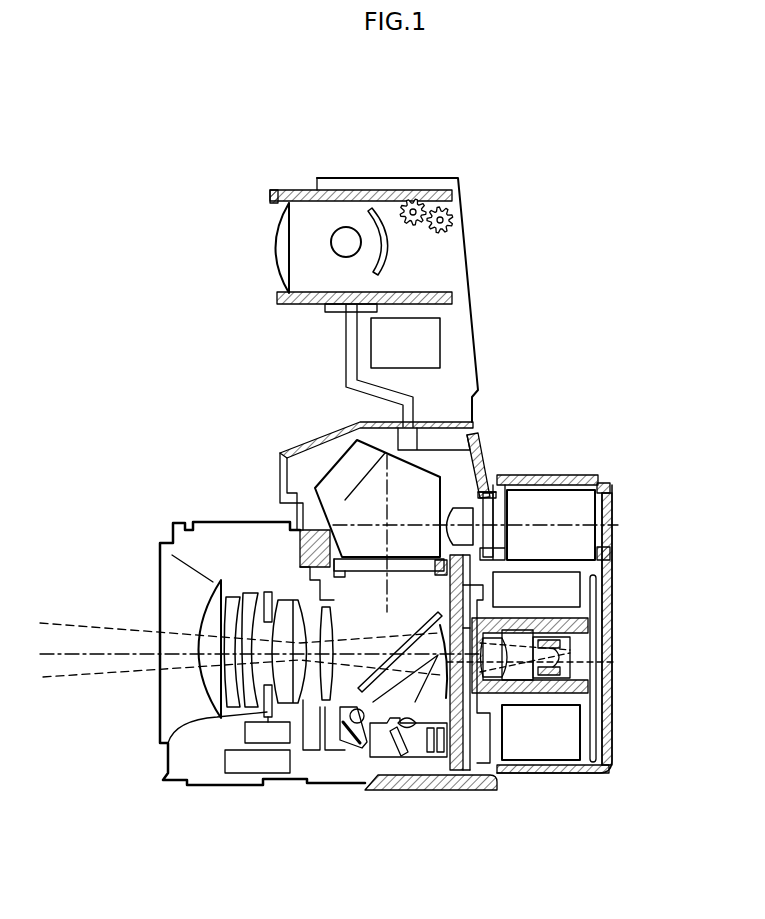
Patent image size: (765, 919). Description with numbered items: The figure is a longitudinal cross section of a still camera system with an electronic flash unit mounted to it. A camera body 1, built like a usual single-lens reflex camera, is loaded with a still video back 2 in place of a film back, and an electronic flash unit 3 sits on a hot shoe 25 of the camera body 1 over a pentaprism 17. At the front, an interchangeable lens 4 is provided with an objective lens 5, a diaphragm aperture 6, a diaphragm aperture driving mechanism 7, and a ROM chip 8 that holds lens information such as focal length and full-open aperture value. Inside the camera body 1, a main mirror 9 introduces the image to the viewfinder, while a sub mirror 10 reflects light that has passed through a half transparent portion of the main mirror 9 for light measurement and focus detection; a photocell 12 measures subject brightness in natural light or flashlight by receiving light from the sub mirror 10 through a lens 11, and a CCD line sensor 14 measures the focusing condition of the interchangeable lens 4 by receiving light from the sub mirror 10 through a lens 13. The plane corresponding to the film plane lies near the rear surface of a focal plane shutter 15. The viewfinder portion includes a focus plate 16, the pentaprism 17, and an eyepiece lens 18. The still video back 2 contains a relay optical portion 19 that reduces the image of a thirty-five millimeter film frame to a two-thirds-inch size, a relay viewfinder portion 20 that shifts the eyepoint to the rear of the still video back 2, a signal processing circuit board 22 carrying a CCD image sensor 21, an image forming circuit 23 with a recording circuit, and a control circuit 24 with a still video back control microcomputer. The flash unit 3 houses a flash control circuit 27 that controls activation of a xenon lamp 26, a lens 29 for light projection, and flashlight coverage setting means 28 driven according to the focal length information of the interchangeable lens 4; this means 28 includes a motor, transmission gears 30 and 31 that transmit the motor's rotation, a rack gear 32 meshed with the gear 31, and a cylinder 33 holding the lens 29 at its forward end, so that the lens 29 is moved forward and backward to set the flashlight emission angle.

The camera body 1 is at (383, 812).
The still video back 2 is at (557, 602).
The electronic flash unit 3 is at (385, 276).
The interchangeable lens 4 is at (260, 635).
The objective lens 5 is at (207, 677).
The diaphragm aperture 6 is at (167, 773).
The diaphragm aperture driving mechanism 7 is at (250, 730).
The ROM chip 8 is at (248, 765).
The main mirror 9 is at (345, 745).
The sub mirror 10 is at (462, 787).
The lens 11 is at (356, 750).
The photocell 12 is at (343, 718).
The lens 13 is at (409, 732).
The CCD line sensor 14 is at (437, 755).
The focal plane shutter 15 is at (452, 588).
The focus plate 16 is at (363, 575).
The pentaprism 17 is at (352, 460).
The eyepiece lens 18 is at (452, 512).
The relay optical portion 19 is at (602, 679).
The relay viewfinder portion 20 is at (585, 500).
The CCD image sensor 21 is at (590, 656).
The signal processing circuit board 22 is at (612, 600).
The image forming circuit 23 is at (572, 578).
The control circuit 24 is at (568, 750).
The hot shoe 25 is at (450, 443).
The xenon lamp 26 is at (347, 227).
The flash control circuit 27 is at (430, 343).
The flashlight coverage setting means 28 is at (435, 257).
The lens for light projection 29 is at (280, 238).
The transmission gear 30 is at (452, 222).
The transmission gear 31 is at (437, 199).
The rack gear 32 is at (438, 196).
The cylinder 33 is at (308, 190).